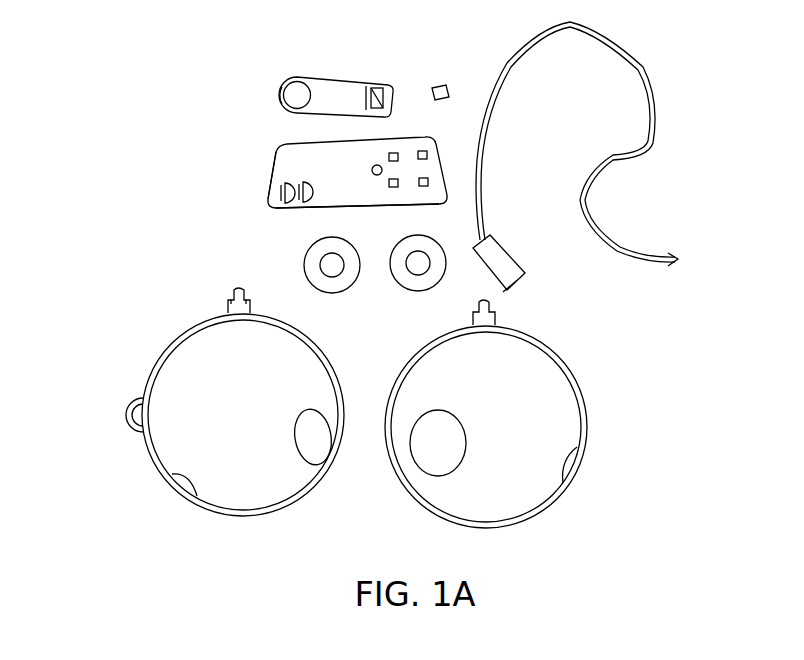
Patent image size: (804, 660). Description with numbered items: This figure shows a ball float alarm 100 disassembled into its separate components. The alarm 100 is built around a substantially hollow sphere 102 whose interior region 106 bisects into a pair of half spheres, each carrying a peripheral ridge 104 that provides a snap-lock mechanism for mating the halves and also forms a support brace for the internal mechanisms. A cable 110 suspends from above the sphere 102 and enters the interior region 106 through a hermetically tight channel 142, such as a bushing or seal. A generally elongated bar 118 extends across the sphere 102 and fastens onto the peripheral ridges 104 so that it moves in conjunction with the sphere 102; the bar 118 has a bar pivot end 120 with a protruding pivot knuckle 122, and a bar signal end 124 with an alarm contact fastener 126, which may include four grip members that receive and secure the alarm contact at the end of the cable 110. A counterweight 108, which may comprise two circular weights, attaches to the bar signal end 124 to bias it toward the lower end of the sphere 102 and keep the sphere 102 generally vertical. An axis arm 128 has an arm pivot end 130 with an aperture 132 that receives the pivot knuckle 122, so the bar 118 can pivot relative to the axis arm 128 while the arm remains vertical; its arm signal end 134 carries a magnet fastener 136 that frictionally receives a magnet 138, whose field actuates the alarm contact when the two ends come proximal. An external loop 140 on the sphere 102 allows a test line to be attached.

The alarm 100 is at (113, 124).
The sphere 102 is at (385, 438).
The peripheral ridge 104 is at (185, 482).
The interior region 106 is at (226, 417).
The counterweight 108 is at (344, 290).
The cable 110 is at (575, 157).
The bar 118 is at (311, 145).
The bar pivot end 120 is at (268, 196).
The pivot knuckle 122 is at (294, 188).
The bar signal end 124 is at (432, 204).
The alarm contact fastener 126 is at (426, 155).
The axis arm 128 is at (336, 80).
The arm pivot end 130 is at (282, 103).
The aperture 132 is at (294, 93).
The arm signal end 134 is at (391, 102).
The magnet fastener 136 is at (373, 90).
The magnet 138 is at (447, 92).
The external loop 140 is at (124, 417).
The hermetically tight channel 142 is at (231, 298).